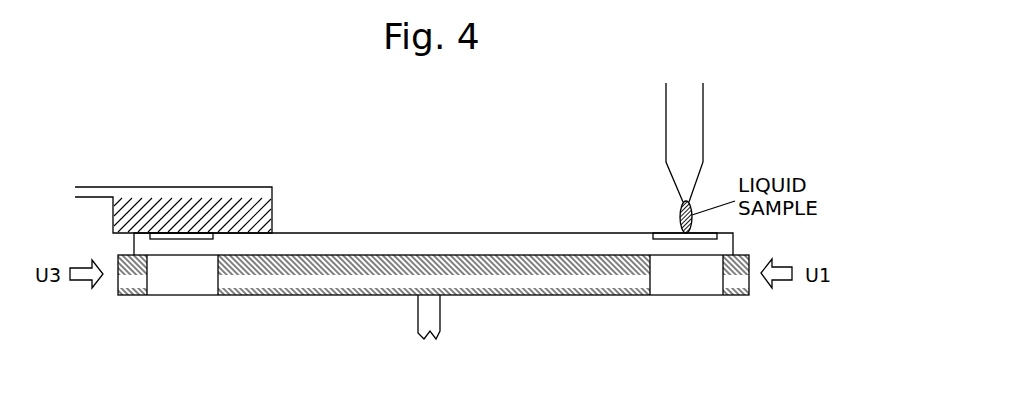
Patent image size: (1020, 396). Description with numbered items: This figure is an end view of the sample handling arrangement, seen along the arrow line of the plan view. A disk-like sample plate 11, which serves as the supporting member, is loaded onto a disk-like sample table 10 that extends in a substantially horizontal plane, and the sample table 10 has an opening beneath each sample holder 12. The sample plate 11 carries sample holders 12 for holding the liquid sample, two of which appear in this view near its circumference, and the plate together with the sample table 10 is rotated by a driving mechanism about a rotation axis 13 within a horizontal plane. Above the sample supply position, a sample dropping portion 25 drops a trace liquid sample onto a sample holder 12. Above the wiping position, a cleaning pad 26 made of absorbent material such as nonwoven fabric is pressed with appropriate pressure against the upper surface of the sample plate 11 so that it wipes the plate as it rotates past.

The sample table 10 is at (503, 292).
The sample plate 11 is at (504, 237).
The sample holder 12 is at (175, 235).
The rotation axis 13 is at (417, 324).
The sample dropping portion 25 is at (703, 115).
The cleaning pad 26 is at (223, 200).